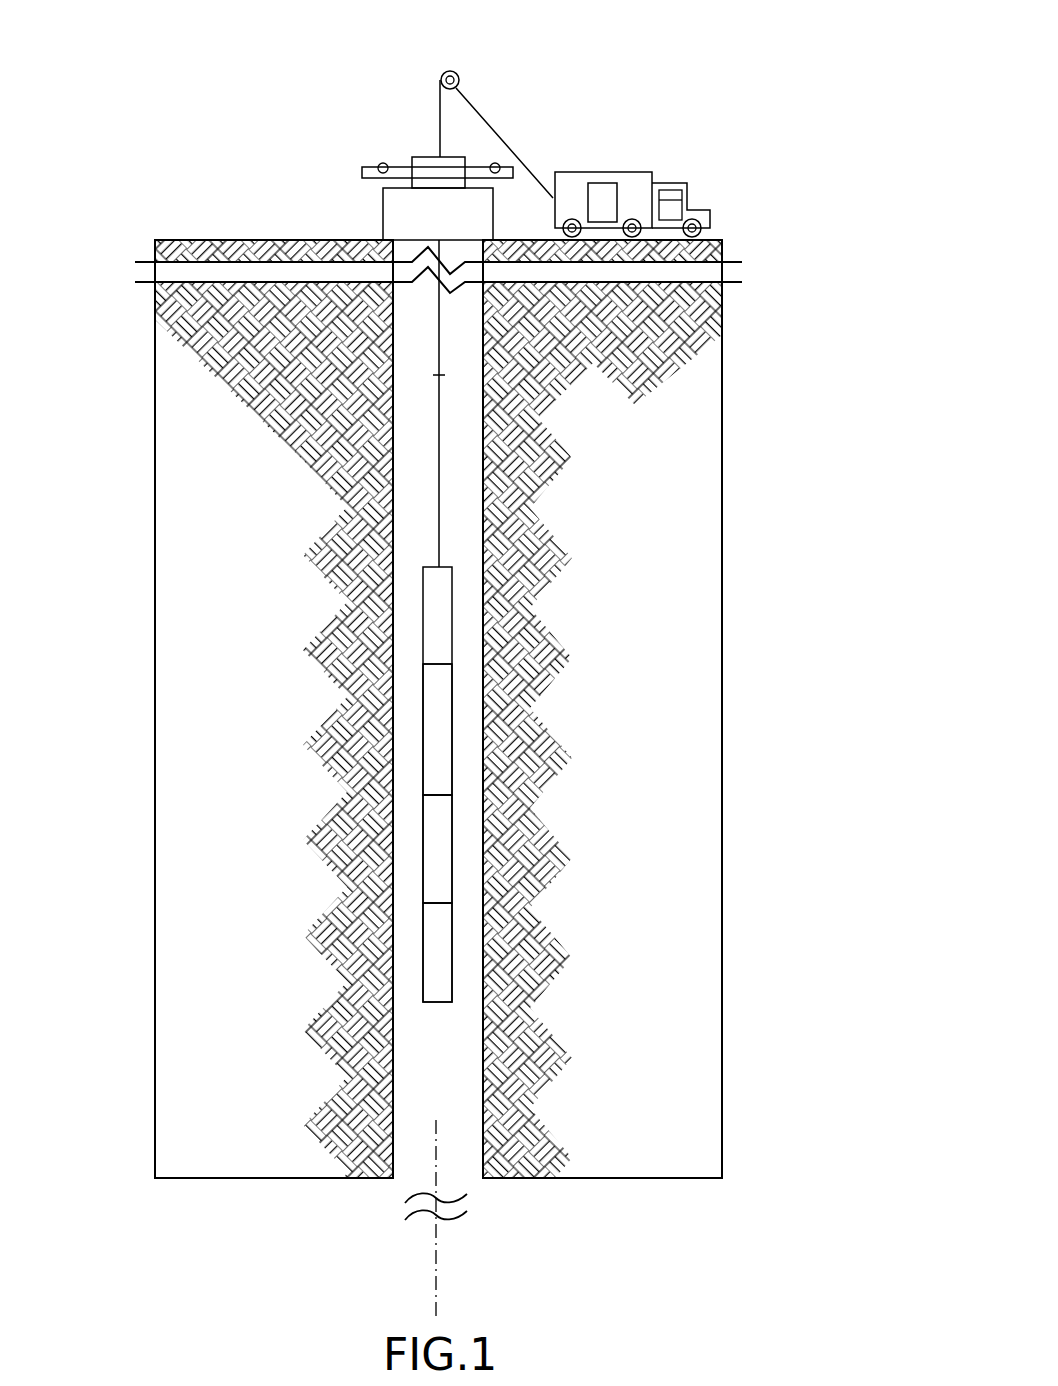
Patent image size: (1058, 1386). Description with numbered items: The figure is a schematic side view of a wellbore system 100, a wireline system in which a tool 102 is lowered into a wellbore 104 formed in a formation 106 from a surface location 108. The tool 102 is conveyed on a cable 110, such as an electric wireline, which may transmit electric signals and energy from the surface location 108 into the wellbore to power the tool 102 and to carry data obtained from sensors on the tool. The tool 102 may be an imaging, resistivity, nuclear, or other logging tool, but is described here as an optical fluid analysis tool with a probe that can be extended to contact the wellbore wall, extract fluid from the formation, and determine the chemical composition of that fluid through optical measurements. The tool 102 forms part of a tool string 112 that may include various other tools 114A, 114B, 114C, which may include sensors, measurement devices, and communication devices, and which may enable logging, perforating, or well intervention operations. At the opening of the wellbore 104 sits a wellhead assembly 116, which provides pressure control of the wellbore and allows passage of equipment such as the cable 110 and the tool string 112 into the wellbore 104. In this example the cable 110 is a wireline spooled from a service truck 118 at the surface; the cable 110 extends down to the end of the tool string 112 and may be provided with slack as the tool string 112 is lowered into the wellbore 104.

The wellbore system 100 is at (633, 75).
The tool 102 is at (435, 605).
The wellbore 104 is at (368, 330).
The formation 106 is at (662, 508).
The surface location 108 is at (720, 240).
The cable 110 is at (503, 133).
The tool string 112 is at (608, 700).
The tool 114A is at (438, 760).
The tool 114B is at (438, 873).
The tool 114C is at (435, 953).
The wellhead assembly 116 is at (422, 145).
The service truck 118 is at (667, 162).